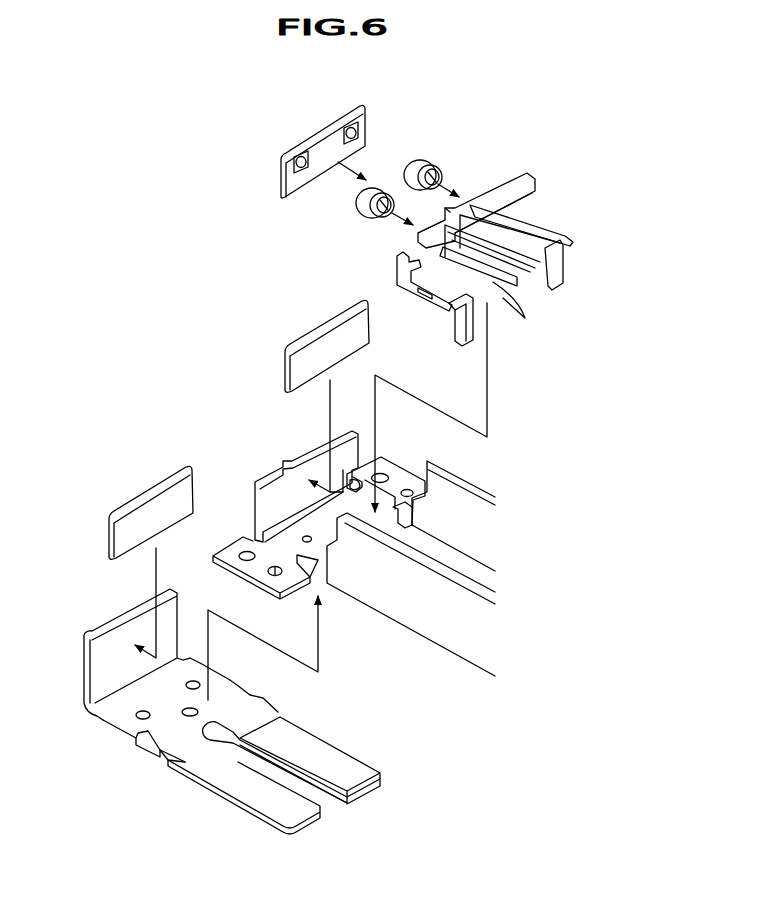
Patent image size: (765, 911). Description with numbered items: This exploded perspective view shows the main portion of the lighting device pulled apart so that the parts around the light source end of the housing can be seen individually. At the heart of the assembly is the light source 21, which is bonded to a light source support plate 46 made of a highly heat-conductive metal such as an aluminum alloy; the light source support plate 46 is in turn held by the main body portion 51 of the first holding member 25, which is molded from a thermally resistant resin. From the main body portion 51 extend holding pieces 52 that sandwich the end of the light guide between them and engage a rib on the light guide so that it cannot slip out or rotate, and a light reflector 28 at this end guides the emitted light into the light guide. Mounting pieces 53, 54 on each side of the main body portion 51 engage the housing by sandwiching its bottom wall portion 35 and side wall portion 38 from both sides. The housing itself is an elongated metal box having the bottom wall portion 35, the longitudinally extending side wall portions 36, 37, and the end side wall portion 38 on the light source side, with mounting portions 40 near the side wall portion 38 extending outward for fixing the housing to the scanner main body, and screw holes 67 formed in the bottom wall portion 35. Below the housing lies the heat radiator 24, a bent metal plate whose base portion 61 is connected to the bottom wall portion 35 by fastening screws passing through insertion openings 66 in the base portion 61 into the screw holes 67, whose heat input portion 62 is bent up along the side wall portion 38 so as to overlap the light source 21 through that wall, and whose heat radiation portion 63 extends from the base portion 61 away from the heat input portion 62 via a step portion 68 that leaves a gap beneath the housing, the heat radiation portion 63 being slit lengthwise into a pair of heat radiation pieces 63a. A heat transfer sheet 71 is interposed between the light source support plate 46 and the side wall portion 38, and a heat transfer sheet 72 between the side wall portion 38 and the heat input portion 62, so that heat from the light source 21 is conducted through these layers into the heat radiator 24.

The light source 21 is at (298, 150).
The light source support plate 46 is at (279, 175).
The light reflector 28 is at (376, 188).
The main body portion 51 is at (500, 188).
The first holding member 25 is at (473, 266).
The mounting piece 54 is at (396, 263).
The holding pieces 52 is at (533, 244).
The mounting piece 53 is at (560, 283).
The heat transfer sheet 71 is at (285, 361).
The heat transfer sheet 72 is at (108, 530).
The side wall portion 38 is at (267, 468).
The mounting portions 40 is at (232, 540).
The screw holes 67 is at (356, 509).
The side wall portion 36 is at (457, 473).
The bottom wall portion 35 is at (442, 552).
The side wall portion 37 is at (389, 598).
The heat input portion 62 is at (113, 616).
The base portion 61 is at (122, 738).
The insertion openings 66 is at (146, 711).
The heat radiator 24 is at (157, 773).
The heat radiation portion 63 is at (228, 810).
The heat radiation pieces 63a is at (322, 828).
The step portion 68 is at (275, 711).